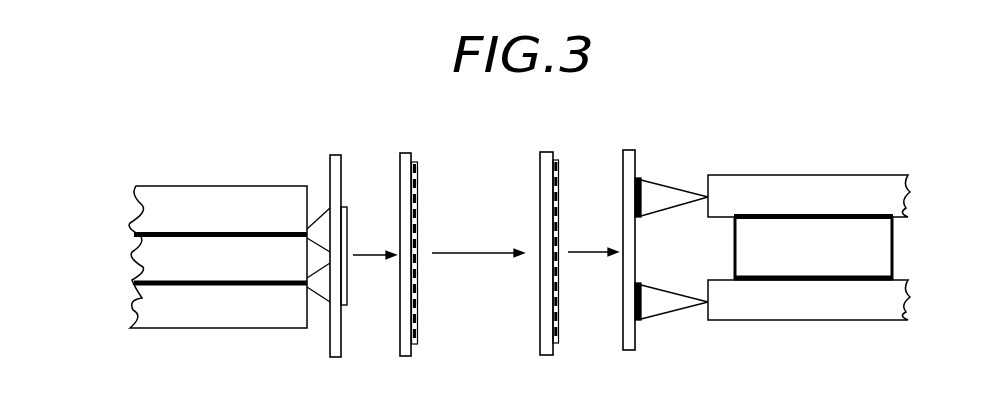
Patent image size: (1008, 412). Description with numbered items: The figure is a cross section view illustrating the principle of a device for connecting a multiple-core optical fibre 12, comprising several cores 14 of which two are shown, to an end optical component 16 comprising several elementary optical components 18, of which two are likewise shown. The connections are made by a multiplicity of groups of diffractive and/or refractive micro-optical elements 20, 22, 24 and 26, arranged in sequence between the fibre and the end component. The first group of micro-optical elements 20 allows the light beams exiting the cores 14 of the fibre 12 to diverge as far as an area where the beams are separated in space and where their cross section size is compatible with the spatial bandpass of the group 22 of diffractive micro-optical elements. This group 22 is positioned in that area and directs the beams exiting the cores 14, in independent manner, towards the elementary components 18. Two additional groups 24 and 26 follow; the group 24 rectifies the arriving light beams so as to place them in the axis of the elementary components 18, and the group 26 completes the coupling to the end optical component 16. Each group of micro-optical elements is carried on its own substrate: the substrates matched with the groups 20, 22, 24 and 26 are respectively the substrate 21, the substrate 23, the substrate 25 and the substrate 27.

The multiple-core optical fibre 12 is at (252, 181).
The cores 14 is at (205, 237).
The end optical component 16 is at (809, 238).
The elementary optical components 18 is at (883, 178).
The first group of micro-optical elements 20 is at (352, 205).
The substrate 21 is at (340, 158).
The group of diffractive micro-optical elements 22 is at (433, 183).
The substrate 23 is at (403, 152).
The group of micro-optical elements 24 is at (570, 182).
The substrate 25 is at (543, 151).
The group of micro-optical elements 26 is at (673, 176).
The substrate 27 is at (628, 150).